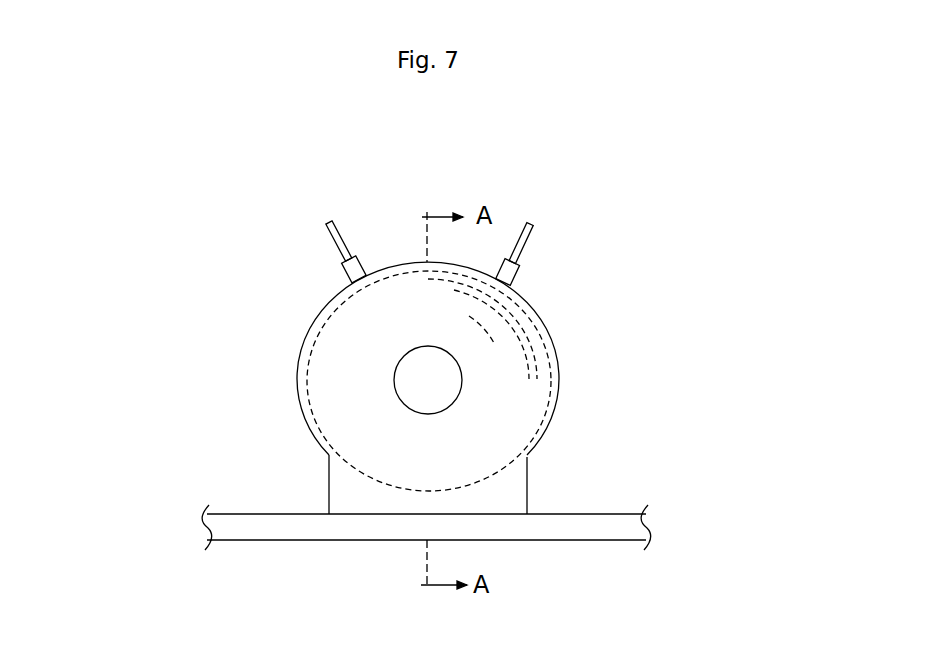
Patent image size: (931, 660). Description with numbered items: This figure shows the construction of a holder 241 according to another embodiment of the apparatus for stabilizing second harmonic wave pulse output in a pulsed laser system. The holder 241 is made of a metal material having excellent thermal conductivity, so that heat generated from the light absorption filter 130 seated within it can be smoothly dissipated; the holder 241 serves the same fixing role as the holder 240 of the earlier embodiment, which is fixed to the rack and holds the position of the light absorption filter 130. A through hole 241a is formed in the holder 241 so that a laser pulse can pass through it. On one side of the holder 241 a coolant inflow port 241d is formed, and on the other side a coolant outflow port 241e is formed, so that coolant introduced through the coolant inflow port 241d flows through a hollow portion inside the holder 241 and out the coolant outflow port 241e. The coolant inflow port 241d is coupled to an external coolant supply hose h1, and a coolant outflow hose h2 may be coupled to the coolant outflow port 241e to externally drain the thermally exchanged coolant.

The holder 241 is at (325, 306).
The holder 240 is at (328, 487).
The through hole 241a is at (448, 363).
The coolant inflow port 241d is at (362, 264).
The coolant outflow port 241e is at (510, 270).
The coolant supply hose h1 is at (331, 239).
The coolant outflow hose h2 is at (529, 228).
The light absorption filter 130 is at (510, 410).